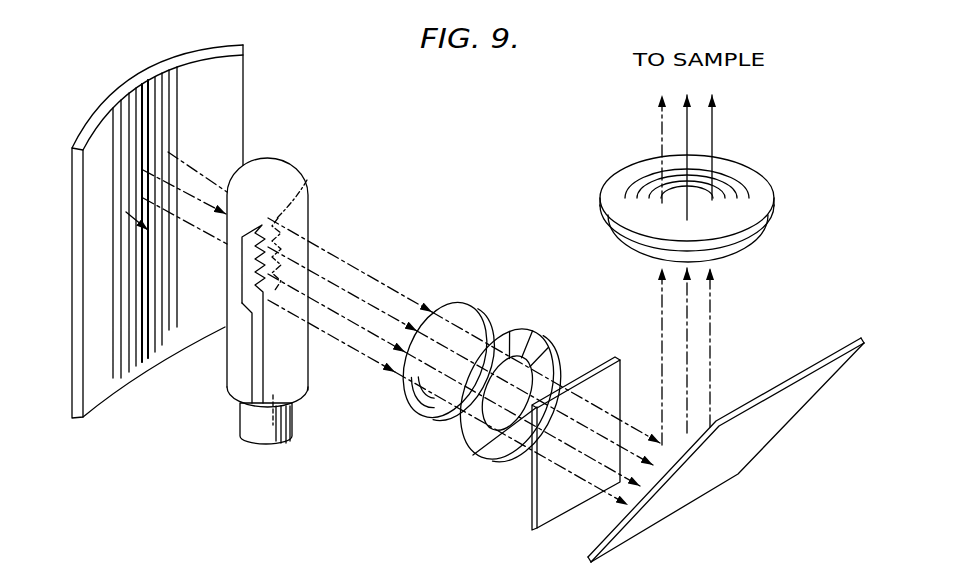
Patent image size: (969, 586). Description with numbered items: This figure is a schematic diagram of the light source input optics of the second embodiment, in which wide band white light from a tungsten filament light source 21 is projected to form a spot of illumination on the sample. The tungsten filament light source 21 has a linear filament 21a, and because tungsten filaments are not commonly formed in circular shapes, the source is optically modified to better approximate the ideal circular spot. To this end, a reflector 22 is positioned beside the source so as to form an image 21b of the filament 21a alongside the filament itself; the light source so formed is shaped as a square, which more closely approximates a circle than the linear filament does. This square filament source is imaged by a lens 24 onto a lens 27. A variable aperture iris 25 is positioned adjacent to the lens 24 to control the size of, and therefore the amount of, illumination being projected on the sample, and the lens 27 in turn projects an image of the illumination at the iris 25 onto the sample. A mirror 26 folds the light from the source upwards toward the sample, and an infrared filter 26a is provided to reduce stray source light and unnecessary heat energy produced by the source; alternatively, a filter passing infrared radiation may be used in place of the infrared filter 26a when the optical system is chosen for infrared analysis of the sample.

The tungsten filament light source 21 is at (292, 377).
The filament 21a is at (257, 279).
The image of filament 21b is at (307, 180).
The reflector 22 is at (71, 385).
The lens 24 is at (468, 322).
The variable aperture iris 25 is at (543, 342).
The mirror 26 is at (782, 384).
The infrared filter 26a is at (608, 378).
The lens 27 is at (758, 199).